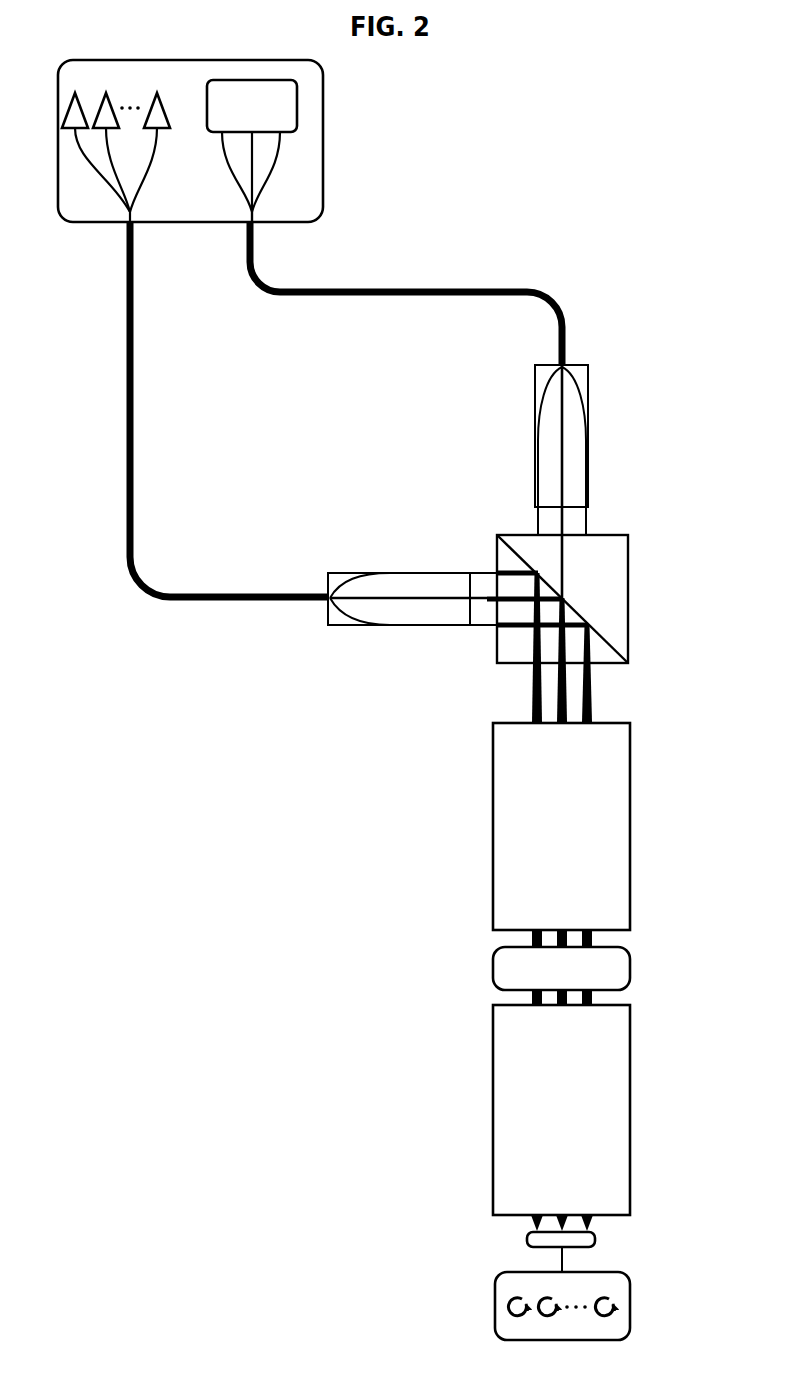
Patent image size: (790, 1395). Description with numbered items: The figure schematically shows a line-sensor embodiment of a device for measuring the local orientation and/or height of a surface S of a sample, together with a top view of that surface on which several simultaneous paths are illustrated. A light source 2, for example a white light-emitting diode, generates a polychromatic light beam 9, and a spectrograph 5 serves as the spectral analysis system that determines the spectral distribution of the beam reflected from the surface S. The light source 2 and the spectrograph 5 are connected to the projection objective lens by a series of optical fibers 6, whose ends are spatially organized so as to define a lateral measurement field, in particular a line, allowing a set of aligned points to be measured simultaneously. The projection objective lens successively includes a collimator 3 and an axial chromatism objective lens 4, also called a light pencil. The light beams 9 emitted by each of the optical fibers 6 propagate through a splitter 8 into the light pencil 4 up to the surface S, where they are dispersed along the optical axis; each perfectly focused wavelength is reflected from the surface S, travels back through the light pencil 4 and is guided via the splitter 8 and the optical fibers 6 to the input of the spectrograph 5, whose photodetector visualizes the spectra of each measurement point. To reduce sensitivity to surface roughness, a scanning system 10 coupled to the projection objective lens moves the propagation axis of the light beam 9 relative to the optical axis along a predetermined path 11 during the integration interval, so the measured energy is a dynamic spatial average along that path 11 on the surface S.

The light source 2 is at (252, 106).
The collimator 3 is at (561, 826).
The axial chromatism objective lens 4 is at (561, 1110).
The spectral analysis system 5 is at (79, 113).
The optical fiber 6 is at (388, 289).
The splitter 8 is at (632, 598).
The light beam 9 is at (532, 681).
The scanning system 10 is at (561, 968).
The predetermined path 11 is at (626, 1302).
The surface of the sample S is at (524, 1239).